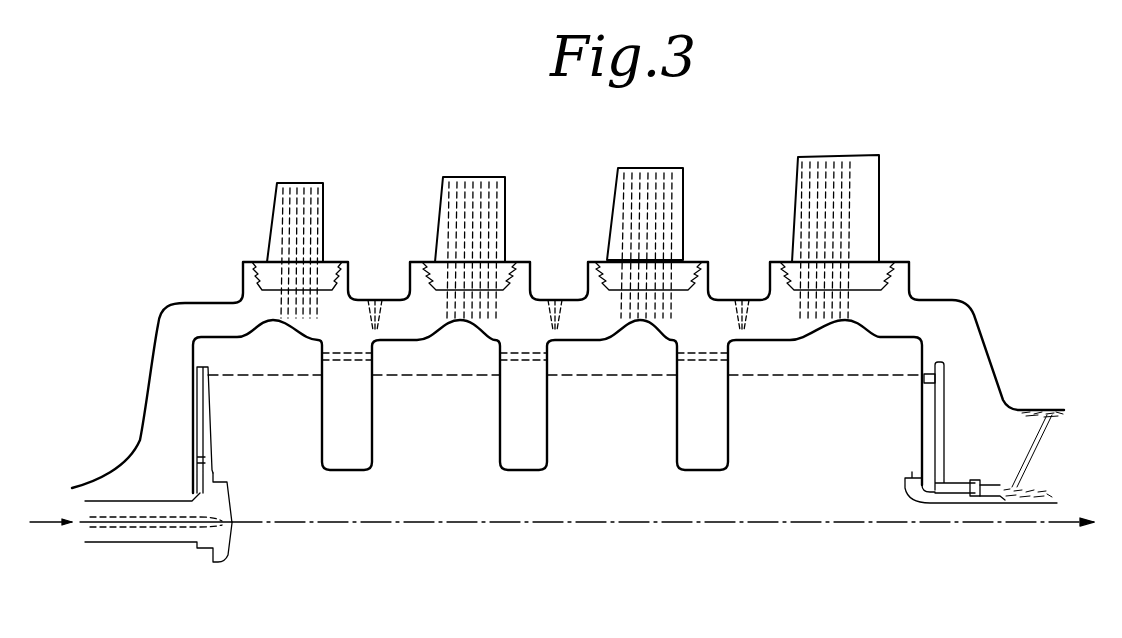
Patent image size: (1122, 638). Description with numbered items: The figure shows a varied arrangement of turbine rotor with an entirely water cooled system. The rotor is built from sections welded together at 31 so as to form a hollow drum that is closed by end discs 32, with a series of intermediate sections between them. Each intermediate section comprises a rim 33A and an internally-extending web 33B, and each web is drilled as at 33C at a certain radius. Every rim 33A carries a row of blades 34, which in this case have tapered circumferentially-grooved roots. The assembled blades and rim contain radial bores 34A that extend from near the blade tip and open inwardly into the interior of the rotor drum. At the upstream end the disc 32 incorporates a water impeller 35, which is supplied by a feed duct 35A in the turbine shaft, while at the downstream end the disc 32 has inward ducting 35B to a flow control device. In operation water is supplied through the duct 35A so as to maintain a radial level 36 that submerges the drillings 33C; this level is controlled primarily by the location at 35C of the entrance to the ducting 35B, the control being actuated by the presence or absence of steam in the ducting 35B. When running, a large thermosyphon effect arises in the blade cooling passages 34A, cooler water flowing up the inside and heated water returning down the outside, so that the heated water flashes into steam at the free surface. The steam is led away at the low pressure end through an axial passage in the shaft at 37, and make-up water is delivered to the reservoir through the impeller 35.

The weld 31 is at (372, 300).
The end disc 32 is at (163, 373).
The rim 33A is at (343, 283).
The internally-extending web 33B is at (355, 440).
The drilling 33C is at (380, 355).
The blade 34 is at (305, 183).
The radial bore 34A is at (672, 184).
The water impeller 35 is at (197, 407).
The feed duct 35A is at (173, 527).
The inward ducting 35B is at (935, 438).
The entrance to the ducting 35C is at (925, 383).
The water level 36 is at (632, 375).
The axial passage 37 is at (950, 513).